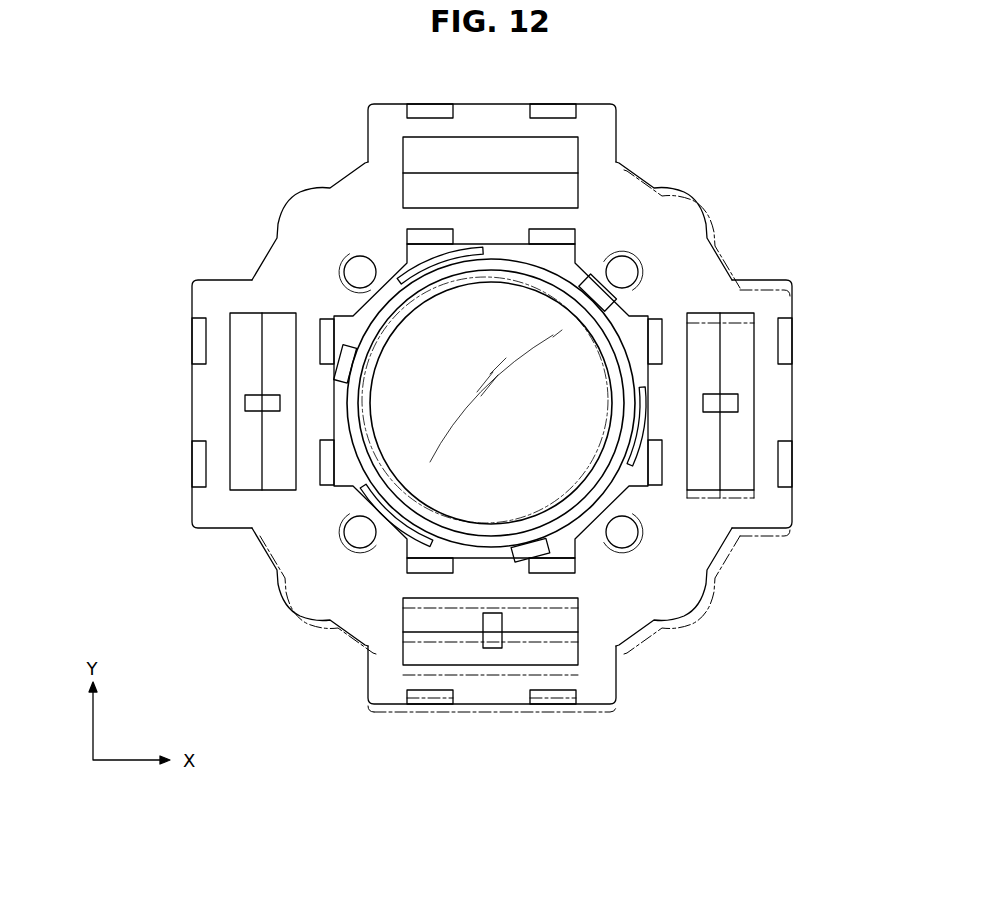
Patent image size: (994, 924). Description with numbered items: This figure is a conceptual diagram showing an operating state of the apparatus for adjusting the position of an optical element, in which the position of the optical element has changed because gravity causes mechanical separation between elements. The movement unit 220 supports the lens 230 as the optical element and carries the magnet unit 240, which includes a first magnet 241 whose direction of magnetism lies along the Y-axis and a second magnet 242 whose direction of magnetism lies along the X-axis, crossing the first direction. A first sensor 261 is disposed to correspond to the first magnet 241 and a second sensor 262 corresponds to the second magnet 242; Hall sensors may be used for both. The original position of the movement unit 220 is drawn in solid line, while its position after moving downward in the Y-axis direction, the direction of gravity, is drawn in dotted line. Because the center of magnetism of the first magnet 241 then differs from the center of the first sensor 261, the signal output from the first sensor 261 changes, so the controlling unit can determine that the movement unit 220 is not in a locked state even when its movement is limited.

The movement unit 220 is at (282, 552).
The lens 230 is at (552, 320).
The magnet unit 240 is at (616, 502).
The first magnet 241 is at (567, 645).
The second magnet 242 is at (742, 482).
The first sensor 261 is at (490, 650).
The second sensor 262 is at (740, 403).